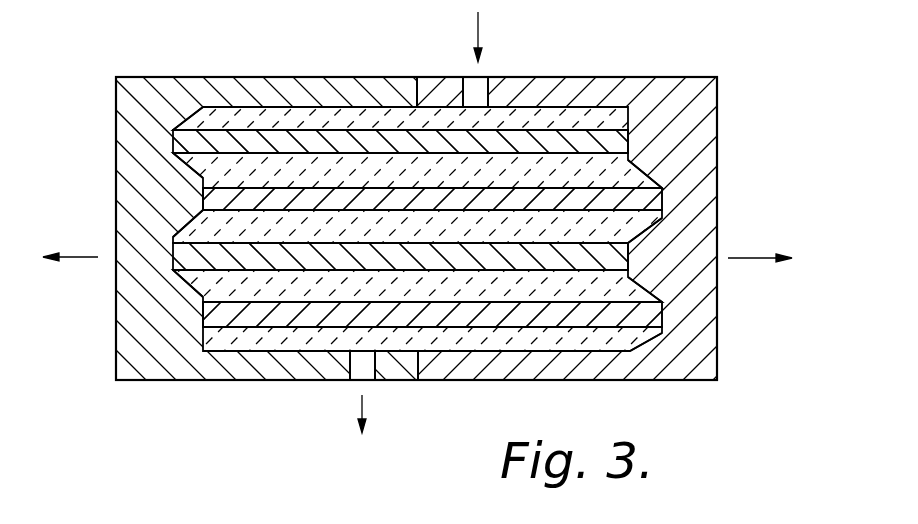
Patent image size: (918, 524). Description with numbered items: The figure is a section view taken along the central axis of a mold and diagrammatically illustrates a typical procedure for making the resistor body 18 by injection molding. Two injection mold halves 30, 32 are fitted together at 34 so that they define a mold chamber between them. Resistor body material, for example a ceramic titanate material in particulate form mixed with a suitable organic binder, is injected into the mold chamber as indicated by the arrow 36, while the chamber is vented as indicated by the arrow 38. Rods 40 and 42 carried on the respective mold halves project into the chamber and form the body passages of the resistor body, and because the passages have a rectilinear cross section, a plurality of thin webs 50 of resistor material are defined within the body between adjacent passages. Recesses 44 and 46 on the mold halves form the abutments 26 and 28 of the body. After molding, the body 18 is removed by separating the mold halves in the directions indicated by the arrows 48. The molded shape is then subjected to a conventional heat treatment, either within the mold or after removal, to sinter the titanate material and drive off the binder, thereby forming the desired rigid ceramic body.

The body 18 is at (273, 122).
The abutment 26 is at (202, 282).
The abutment 28 is at (655, 219).
The injection mold half 30 is at (262, 87).
The injection mold half 32 is at (589, 88).
The fitting location of mold halves 34 is at (418, 86).
The arrow indicating injection 36 is at (478, 24).
The arrow indicating venting 38 is at (362, 395).
The rods 40 is at (219, 138).
The rods 42 is at (533, 132).
The recess 44 is at (186, 110).
The recess 46 is at (636, 163).
The arrows indicating separation of mold halves 48 is at (747, 257).
The webs 50 is at (314, 225).